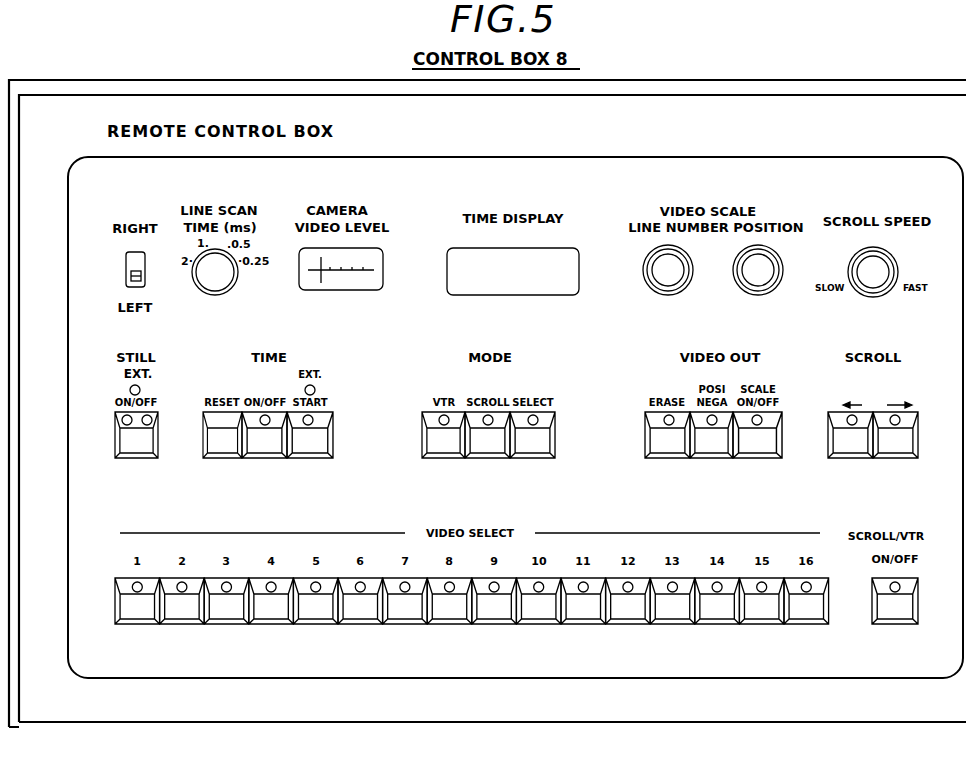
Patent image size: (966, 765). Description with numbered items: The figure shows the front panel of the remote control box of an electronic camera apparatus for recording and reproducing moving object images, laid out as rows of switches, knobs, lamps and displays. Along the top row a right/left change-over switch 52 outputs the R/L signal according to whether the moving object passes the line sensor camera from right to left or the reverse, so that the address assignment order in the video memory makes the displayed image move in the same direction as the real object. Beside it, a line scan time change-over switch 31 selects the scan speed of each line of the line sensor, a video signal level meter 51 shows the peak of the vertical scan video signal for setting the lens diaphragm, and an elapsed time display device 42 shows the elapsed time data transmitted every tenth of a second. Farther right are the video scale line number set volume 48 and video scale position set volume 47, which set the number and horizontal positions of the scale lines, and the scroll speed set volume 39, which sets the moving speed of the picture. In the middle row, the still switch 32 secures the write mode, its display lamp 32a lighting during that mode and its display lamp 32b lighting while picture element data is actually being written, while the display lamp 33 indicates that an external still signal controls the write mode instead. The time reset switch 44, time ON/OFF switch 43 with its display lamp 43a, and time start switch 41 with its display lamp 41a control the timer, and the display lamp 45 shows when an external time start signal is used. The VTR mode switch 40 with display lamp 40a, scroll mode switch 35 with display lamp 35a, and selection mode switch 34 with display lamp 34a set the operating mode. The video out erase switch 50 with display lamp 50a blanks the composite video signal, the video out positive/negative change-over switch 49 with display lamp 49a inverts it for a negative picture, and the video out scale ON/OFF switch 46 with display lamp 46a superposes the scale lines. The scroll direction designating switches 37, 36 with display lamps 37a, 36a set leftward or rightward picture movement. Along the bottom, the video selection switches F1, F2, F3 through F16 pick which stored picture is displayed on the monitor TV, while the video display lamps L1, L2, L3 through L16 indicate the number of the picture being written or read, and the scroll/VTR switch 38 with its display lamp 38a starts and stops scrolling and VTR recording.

The line scan time change-over switch 31 is at (218, 282).
The still switch 32 is at (136, 445).
The display lamp 32a is at (121, 418).
The display lamp 32b is at (152, 425).
The display lamp 33 is at (129, 387).
The selection mode switch 34 is at (537, 446).
The display lamp 34a is at (539, 420).
The scroll mode switch 35 is at (488, 446).
The display lamp 35a is at (492, 425).
The scroll direction designating switch 36 is at (900, 446).
The display lamp 36a is at (901, 417).
The scroll direction designating switch 37 is at (850, 446).
The display lamp 37a is at (848, 417).
The scroll/VTR switch 38 is at (897, 612).
The display lamp 38a is at (902, 588).
The scroll speed set volume 39 is at (880, 265).
The VTR mode switch 40 is at (443, 446).
The display lamp 40a is at (440, 418).
The time start switch 41 is at (310, 445).
The display lamp 41a is at (315, 420).
The elapsed time display device 42 is at (579, 266).
The time ON/OFF switch 43 is at (258, 446).
The display lamp 43a is at (268, 425).
The time reset switch 44 is at (223, 445).
The display lamp 45 is at (315, 389).
The video out scale ON/OFF switch 46 is at (758, 446).
The display lamp 46a is at (762, 419).
The video scale position set volume 47 is at (760, 282).
The video scale line number set volume 48 is at (674, 282).
The video out positive/negative change-over switch 49 is at (713, 446).
The display lamp 49a is at (715, 425).
The video out erase switch 50 is at (668, 445).
The display lamp 50a is at (664, 422).
The video signal level meter 51 is at (368, 290).
The right/left change-over switch 52 is at (127, 277).
The video selection switch F1 is at (135, 612).
The video selection switch F2 is at (186, 612).
The video selection switch F3 is at (228, 612).
The video selection switch F16 is at (807, 612).
The video display lamp L1 is at (132, 583).
The video display lamp L2 is at (179, 583).
The video display lamp L3 is at (222, 583).
The video display lamp L16 is at (811, 584).